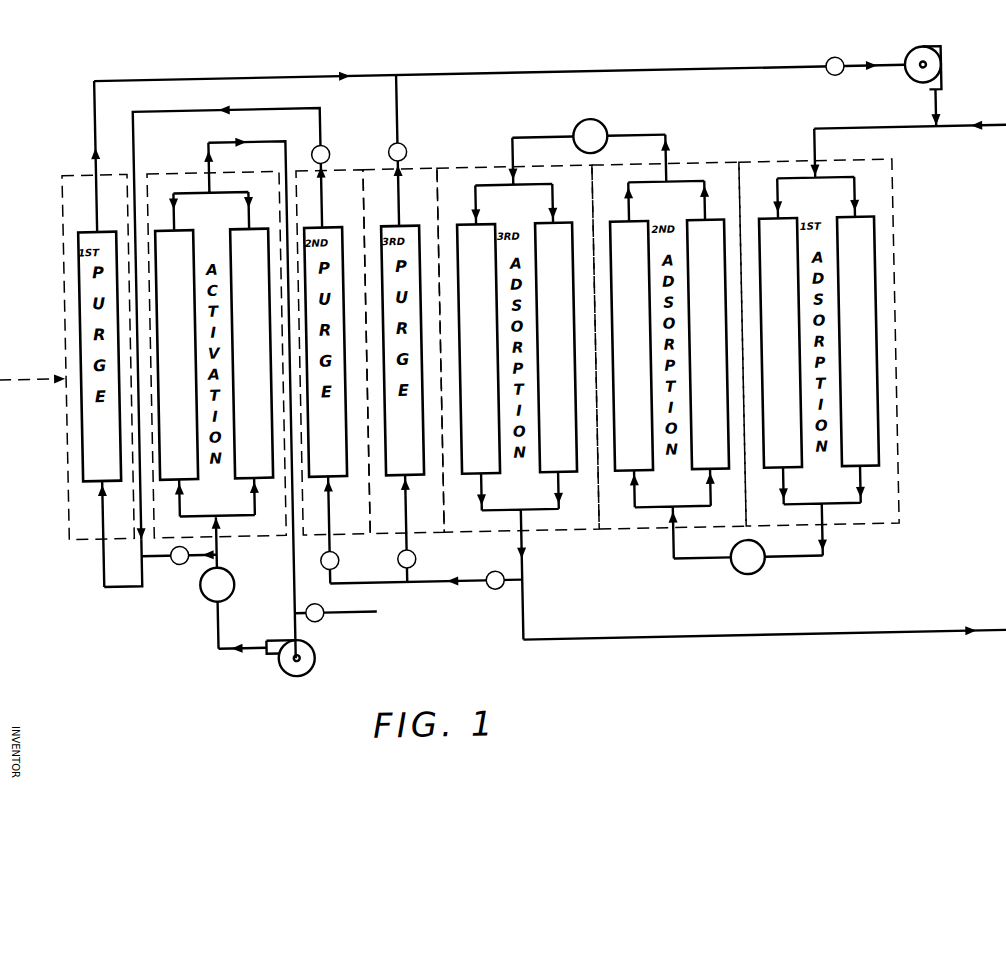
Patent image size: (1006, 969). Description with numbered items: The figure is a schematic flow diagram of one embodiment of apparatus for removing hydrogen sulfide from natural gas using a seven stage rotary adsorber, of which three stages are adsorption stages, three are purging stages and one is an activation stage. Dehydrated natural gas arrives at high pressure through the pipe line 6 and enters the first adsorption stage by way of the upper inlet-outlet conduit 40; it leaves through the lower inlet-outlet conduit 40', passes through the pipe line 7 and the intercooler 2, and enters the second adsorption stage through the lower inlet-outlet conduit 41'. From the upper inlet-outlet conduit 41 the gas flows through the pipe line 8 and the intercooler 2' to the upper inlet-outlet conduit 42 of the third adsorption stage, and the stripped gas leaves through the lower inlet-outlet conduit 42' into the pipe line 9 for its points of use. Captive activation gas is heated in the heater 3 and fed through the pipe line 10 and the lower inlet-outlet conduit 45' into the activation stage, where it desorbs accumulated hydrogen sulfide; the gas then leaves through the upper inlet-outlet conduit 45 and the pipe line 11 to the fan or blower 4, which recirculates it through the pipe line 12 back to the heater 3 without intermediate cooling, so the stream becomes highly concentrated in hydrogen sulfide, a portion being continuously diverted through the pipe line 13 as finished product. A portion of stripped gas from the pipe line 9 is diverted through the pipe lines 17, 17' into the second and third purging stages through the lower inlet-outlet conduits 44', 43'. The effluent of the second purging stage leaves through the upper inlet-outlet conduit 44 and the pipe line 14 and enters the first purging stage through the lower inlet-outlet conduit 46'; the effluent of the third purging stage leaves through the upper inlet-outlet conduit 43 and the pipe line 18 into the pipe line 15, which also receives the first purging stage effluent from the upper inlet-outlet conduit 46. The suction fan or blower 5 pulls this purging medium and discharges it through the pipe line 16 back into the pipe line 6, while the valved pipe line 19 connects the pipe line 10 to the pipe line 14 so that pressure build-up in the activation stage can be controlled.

The intercooler 2 is at (754, 572).
The intercooler 2' is at (598, 124).
The heater 3 is at (196, 584).
The fan or blower 4 is at (281, 670).
The suction fan or blower 5 is at (936, 67).
The pipe line 6 is at (994, 142).
The pipe line 7 is at (798, 563).
The pipe line 8 is at (634, 138).
The pipe line 9 is at (764, 642).
The pipe line 10 is at (216, 552).
The pipe line 11 is at (290, 144).
The pipe line 12 is at (212, 626).
The pipe line 13 is at (308, 618).
The pipe line 14 is at (326, 118).
The pipe line 15 is at (278, 73).
The pipe line 16 is at (941, 114).
The pipe line 17 is at (426, 594).
The pipe line 17' is at (429, 556).
The pipe line 18 is at (402, 122).
The valved pipe line 19 is at (159, 566).
The upper inlet-outlet conduit 40 is at (814, 171).
The lower inlet-outlet conduit 40' is at (827, 516).
The upper inlet-outlet conduit 41 is at (666, 174).
The lower inlet-outlet conduit 41' is at (670, 524).
The upper inlet-outlet conduit 42 is at (512, 179).
The lower inlet-outlet conduit 42' is at (525, 556).
The upper inlet-outlet conduit 43 is at (414, 193).
The lower inlet-outlet conduit 43' is at (424, 528).
The upper inlet-outlet conduit 44 is at (335, 186).
The lower inlet-outlet conduit 44' is at (344, 530).
The upper inlet-outlet conduit 45 is at (209, 183).
The lower inlet-outlet conduit 45' is at (226, 523).
The upper inlet-outlet conduit 46 is at (77, 157).
The lower inlet-outlet conduit 46' is at (77, 535).